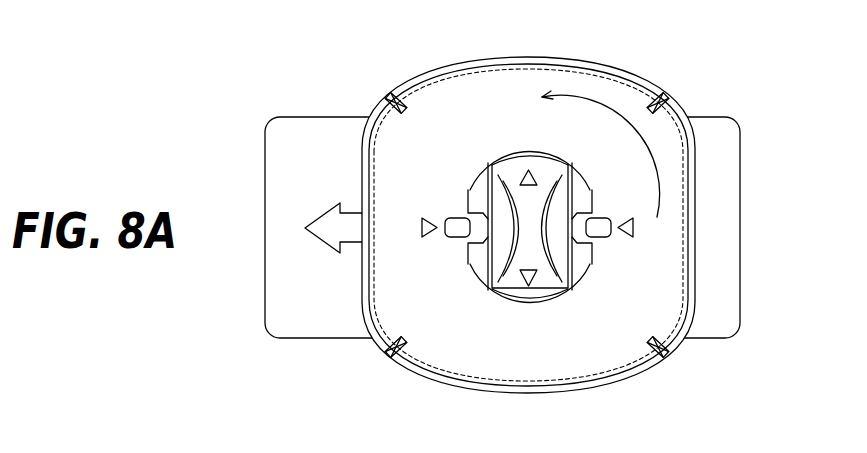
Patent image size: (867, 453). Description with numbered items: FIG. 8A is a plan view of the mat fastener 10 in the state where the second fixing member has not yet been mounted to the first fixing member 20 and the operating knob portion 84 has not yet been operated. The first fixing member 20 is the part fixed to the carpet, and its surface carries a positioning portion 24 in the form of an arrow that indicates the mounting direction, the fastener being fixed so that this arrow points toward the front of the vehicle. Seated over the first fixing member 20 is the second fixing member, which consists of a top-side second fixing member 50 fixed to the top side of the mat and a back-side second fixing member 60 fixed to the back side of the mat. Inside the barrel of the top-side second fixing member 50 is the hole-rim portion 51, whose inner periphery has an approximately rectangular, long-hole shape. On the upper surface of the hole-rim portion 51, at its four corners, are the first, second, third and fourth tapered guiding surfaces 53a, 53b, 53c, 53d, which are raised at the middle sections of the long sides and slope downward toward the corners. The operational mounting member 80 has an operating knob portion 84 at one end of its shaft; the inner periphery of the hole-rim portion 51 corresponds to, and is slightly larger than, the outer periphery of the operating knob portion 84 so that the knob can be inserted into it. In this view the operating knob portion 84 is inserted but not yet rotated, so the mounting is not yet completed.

The mat fastener 10 is at (536, 437).
The first fixing member 20 is at (734, 213).
The positioning portion 24 is at (327, 213).
The top-side second fixing member 50 is at (660, 263).
The hole-rim portion 51 is at (573, 231).
The first tapered guiding surface 53a is at (580, 187).
The second tapered guiding surface 53b is at (580, 263).
The third tapered guiding surface 53c is at (477, 252).
The fourth tapered guiding surface 53d is at (477, 187).
The back-side second fixing member 60 is at (665, 115).
The operational mounting member 80 is at (512, 177).
The operating knob portion 84 is at (545, 170).